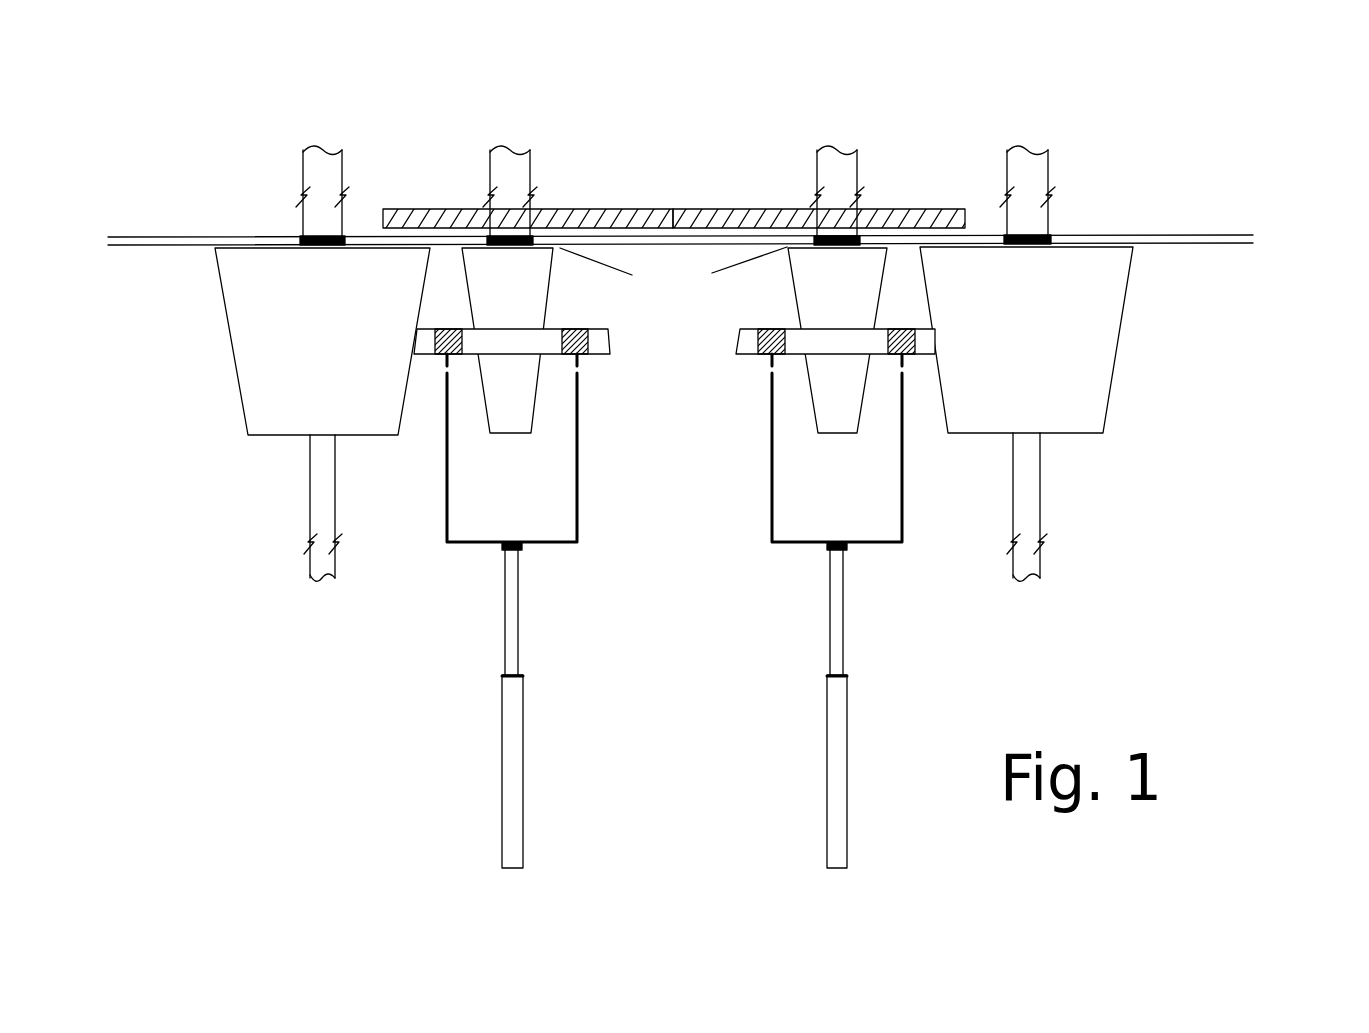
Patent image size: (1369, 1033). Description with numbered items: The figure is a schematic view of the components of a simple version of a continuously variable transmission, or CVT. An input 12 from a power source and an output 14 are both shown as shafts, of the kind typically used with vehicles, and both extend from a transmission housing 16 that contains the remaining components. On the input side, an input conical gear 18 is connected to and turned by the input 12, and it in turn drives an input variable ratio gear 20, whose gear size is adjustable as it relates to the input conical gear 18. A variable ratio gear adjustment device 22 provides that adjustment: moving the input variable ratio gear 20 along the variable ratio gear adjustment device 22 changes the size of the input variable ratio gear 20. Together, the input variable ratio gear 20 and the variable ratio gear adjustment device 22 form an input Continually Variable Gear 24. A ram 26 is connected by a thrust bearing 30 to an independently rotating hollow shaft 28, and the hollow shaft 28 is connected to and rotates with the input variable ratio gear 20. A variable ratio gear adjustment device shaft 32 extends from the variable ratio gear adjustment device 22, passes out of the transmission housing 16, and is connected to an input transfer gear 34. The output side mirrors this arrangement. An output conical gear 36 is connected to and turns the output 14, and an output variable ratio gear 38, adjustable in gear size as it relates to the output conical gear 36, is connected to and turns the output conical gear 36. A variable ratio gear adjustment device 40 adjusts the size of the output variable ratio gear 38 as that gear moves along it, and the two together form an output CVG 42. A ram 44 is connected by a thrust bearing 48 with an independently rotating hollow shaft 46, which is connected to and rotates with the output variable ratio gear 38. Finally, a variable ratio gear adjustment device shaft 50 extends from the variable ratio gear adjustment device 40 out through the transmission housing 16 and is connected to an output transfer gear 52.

The input 12 is at (322, 148).
The output 14 is at (1022, 148).
The transmission housing 16 is at (1253, 235).
The input conical gear 18 is at (330, 348).
The input variable ratio gear 20 is at (512, 342).
The variable ratio gear adjustment device 22 is at (507, 340).
The input Continually Variable Gear 24 is at (631, 333).
The ram 26 is at (523, 738).
The hollow shaft 28 is at (578, 498).
The thrust bearing 30 is at (523, 552).
The variable ratio gear adjustment device shaft 32 is at (527, 175).
The input transfer gear 34 is at (422, 208).
The output conical gear 36 is at (1048, 356).
The output variable ratio gear 38 is at (835, 341).
The variable ratio gear adjustment device 40 is at (837, 340).
The output CVG 42 is at (730, 315).
The ram 44 is at (827, 718).
The hollow shaft 46 is at (770, 523).
The thrust bearing 48 is at (850, 547).
The variable ratio gear adjustment device shaft 50 is at (840, 158).
The output transfer gear 52 is at (902, 207).